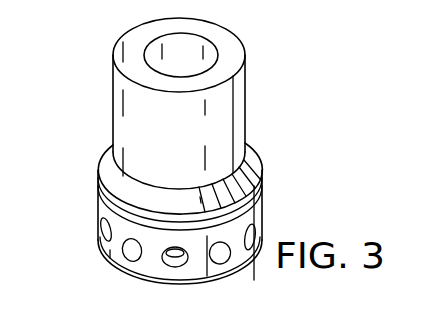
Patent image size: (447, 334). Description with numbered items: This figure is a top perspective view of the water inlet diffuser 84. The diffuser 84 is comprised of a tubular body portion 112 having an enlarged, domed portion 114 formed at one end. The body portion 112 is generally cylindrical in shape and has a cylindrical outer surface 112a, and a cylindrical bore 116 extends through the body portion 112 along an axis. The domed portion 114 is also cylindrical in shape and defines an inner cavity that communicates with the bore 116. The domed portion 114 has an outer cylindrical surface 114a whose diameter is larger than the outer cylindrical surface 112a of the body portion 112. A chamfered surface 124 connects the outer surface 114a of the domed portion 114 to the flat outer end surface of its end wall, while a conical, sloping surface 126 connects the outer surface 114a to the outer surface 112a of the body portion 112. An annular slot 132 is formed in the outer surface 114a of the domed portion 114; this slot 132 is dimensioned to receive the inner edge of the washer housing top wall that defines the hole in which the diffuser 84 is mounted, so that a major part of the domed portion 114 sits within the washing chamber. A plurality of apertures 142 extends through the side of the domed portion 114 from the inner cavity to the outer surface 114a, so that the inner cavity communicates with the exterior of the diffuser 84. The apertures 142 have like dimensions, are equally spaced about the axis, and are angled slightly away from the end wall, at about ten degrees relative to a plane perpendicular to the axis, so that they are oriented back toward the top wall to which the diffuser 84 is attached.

The diffuser 84 is at (275, 160).
The tubular body portion 112 is at (248, 91).
The cylindrical outer surface 112a is at (128, 121).
The domed portion 114 is at (264, 212).
The outer cylindrical surface 114a is at (222, 270).
The cylindrical bore 116 is at (203, 46).
The chamfered surface 124 is at (184, 287).
The conical, sloping surface 126 is at (113, 180).
The annular slot 132 is at (128, 220).
The apertures 142 is at (172, 263).